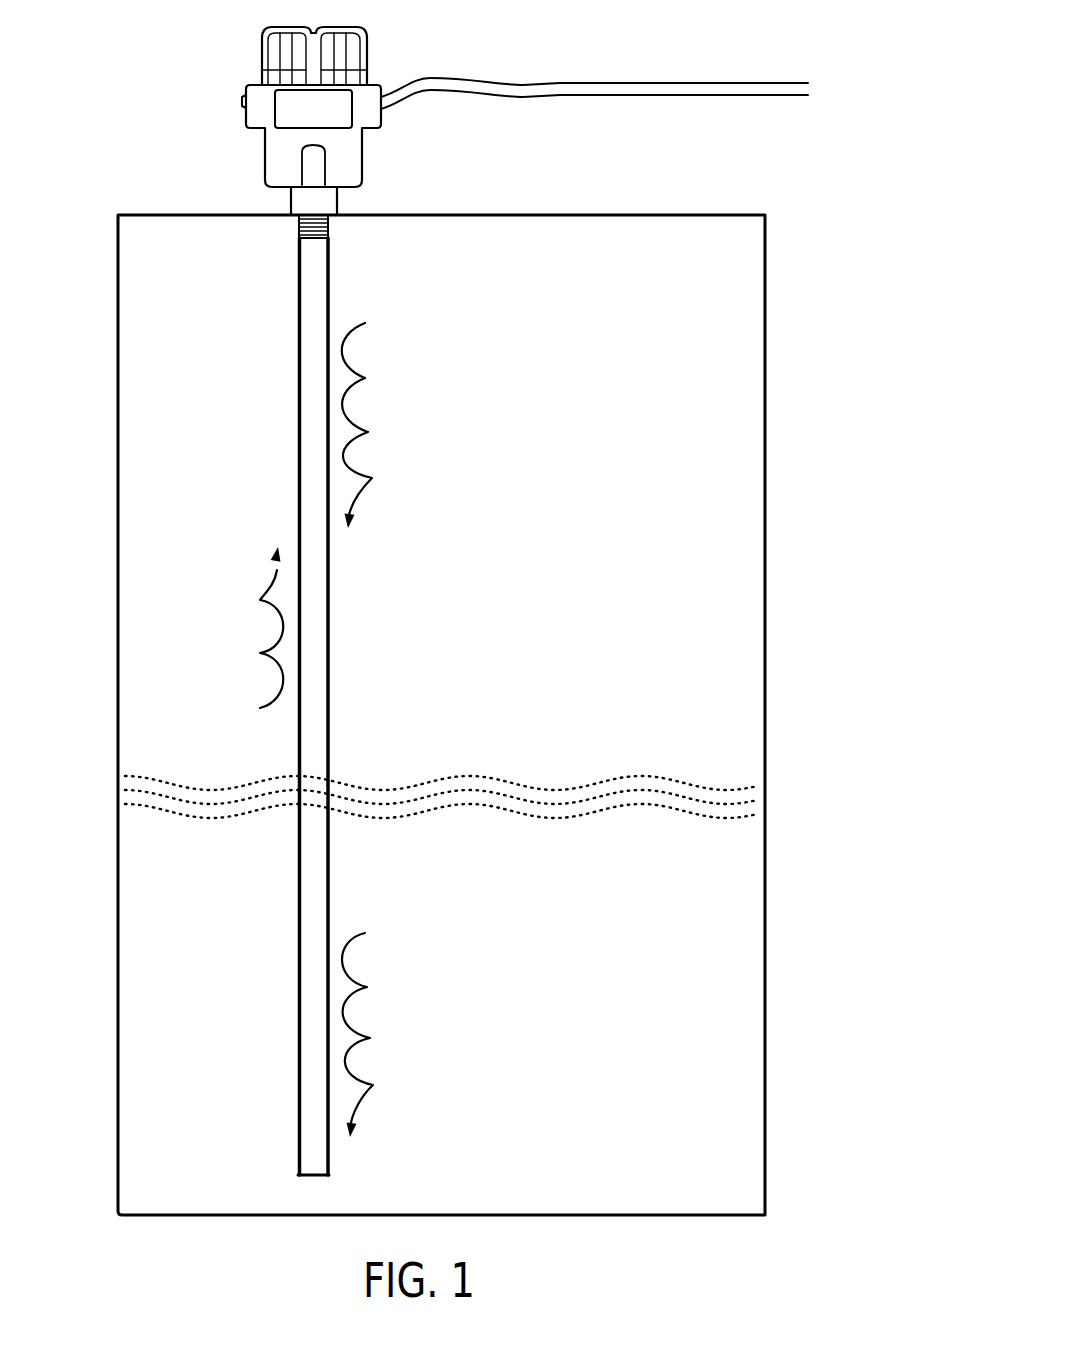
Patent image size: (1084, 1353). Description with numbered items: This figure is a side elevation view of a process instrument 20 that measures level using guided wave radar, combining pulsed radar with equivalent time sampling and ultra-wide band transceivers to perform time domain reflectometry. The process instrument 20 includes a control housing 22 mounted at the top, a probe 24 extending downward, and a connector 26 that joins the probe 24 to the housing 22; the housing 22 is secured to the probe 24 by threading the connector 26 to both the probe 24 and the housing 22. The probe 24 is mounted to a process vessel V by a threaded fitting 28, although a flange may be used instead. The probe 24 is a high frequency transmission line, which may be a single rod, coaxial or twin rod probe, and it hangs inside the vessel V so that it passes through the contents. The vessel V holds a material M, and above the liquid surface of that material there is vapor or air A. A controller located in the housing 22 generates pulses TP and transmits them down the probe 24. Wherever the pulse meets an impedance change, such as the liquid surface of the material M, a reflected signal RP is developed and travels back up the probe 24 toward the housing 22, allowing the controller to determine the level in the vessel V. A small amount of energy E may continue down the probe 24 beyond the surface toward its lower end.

The process instrument 20 is at (514, 590).
The control housing 22 is at (367, 167).
The probe 24 is at (330, 292).
The connector 26 is at (330, 200).
The threaded fitting 28 is at (297, 225).
The process vessel V is at (682, 213).
The vapor or air A is at (655, 613).
The material M is at (655, 887).
The transmitted pulses TP is at (380, 417).
The reflected signal RP is at (243, 593).
The energy E is at (380, 1072).